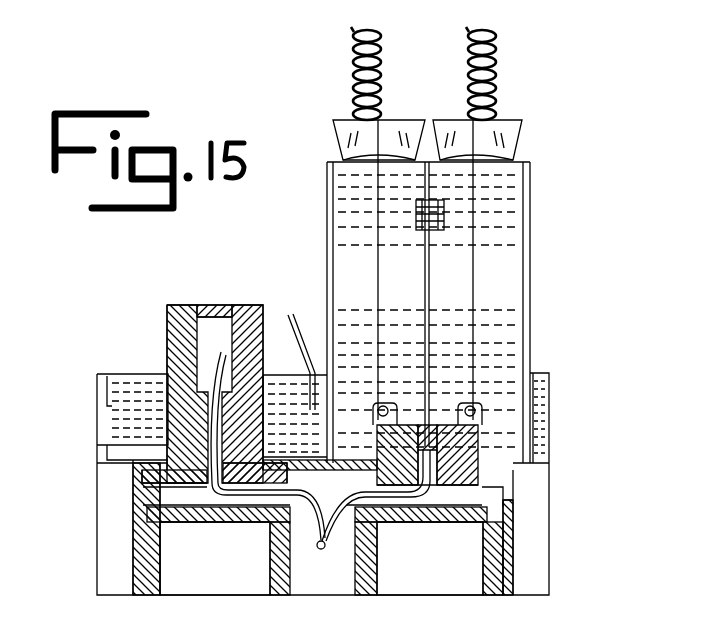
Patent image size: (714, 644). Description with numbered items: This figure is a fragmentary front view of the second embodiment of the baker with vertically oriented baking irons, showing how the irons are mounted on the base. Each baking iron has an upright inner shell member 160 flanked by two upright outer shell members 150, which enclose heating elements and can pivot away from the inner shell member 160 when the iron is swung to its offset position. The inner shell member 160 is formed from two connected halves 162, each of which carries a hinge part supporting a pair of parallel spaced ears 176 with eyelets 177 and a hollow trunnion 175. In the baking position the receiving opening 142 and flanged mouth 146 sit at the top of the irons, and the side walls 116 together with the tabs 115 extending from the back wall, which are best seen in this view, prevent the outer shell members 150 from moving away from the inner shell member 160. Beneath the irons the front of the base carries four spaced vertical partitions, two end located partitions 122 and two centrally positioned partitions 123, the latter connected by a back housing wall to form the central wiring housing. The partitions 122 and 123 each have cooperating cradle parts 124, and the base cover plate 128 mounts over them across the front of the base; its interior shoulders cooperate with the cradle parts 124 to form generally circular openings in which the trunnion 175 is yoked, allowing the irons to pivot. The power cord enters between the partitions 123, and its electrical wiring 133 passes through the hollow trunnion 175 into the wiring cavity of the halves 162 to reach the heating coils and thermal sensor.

The tabs 115 is at (299, 349).
The side walls 116 is at (97, 388).
The end located partitions 122 is at (143, 585).
The centrally positioned partitions 123 is at (357, 566).
The cradle parts 124 is at (152, 515).
The base cover plate 128 is at (507, 522).
The electrical wiring 133 is at (160, 378).
The receiving opening 142 is at (456, 116).
The flanged mouth 146 is at (345, 122).
The outer shell member 150 is at (513, 215).
The inner shell member 160 is at (426, 263).
The halves 162 is at (457, 298).
The hollow trunnion 175 is at (195, 517).
The ears 176 is at (505, 421).
The eyelets 177 is at (478, 407).